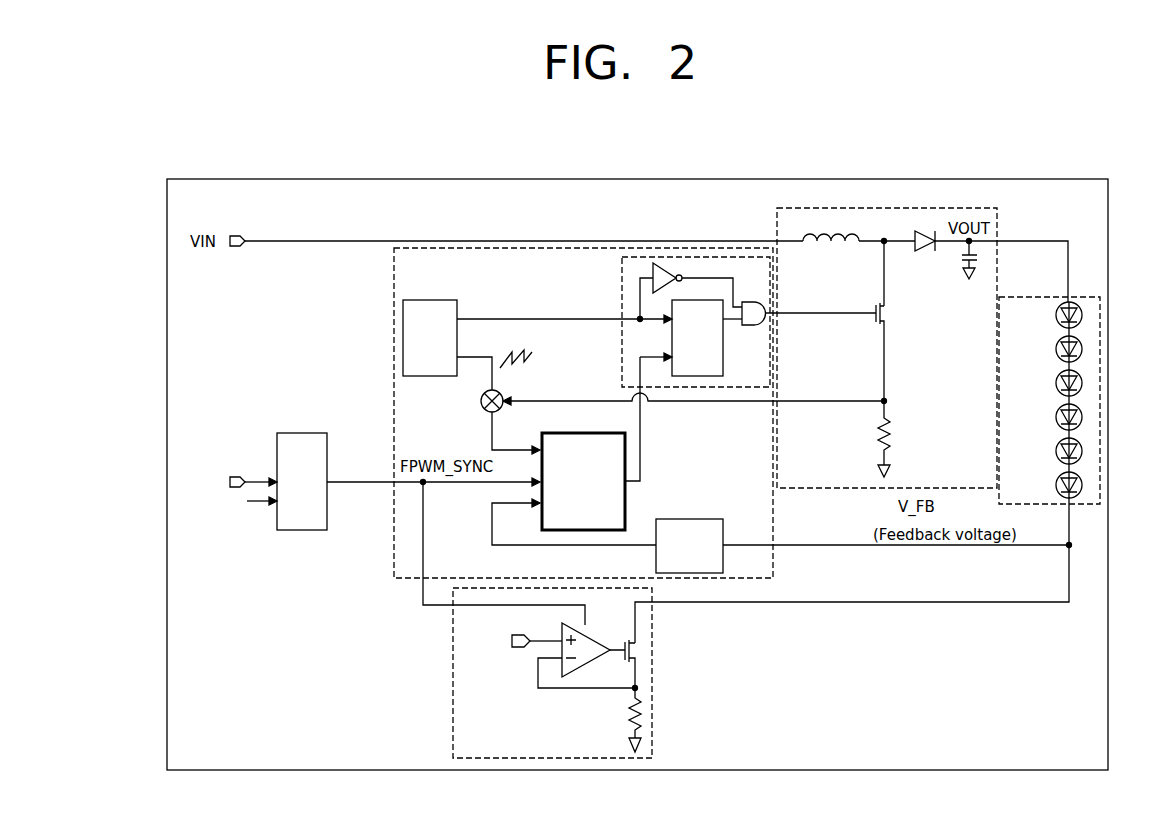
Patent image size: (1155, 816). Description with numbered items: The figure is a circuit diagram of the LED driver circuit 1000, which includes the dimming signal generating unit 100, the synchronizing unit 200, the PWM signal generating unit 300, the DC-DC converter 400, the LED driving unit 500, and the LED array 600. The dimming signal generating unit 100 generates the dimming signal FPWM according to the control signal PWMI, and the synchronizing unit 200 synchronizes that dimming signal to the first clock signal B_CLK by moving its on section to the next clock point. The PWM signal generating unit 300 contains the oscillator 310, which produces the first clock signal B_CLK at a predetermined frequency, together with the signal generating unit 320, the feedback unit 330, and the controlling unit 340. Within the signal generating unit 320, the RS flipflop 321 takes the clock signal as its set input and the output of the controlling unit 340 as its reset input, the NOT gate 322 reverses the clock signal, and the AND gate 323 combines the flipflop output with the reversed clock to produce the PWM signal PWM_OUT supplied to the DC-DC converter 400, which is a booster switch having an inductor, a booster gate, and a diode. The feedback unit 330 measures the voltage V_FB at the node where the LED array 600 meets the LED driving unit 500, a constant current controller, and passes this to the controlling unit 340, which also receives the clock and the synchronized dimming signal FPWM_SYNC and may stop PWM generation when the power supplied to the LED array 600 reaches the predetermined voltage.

The LED driver circuit 1000 is at (481, 179).
The dimming signal generating unit 100 is at (233, 473).
The synchronizing unit 200 is at (302, 433).
The PWM signal generating unit 300 is at (394, 278).
The oscillator 310 is at (432, 377).
The signal generating unit 320 is at (622, 268).
The RS flipflop 321 is at (672, 336).
The NOT gate 322 is at (665, 260).
The AND gate 323 is at (752, 326).
The feedback unit 330 is at (703, 519).
The controlling unit 340 is at (626, 440).
The DC-DC converter 400 is at (793, 208).
The LED driving unit 500 is at (652, 672).
The LED array 600 is at (1083, 296).